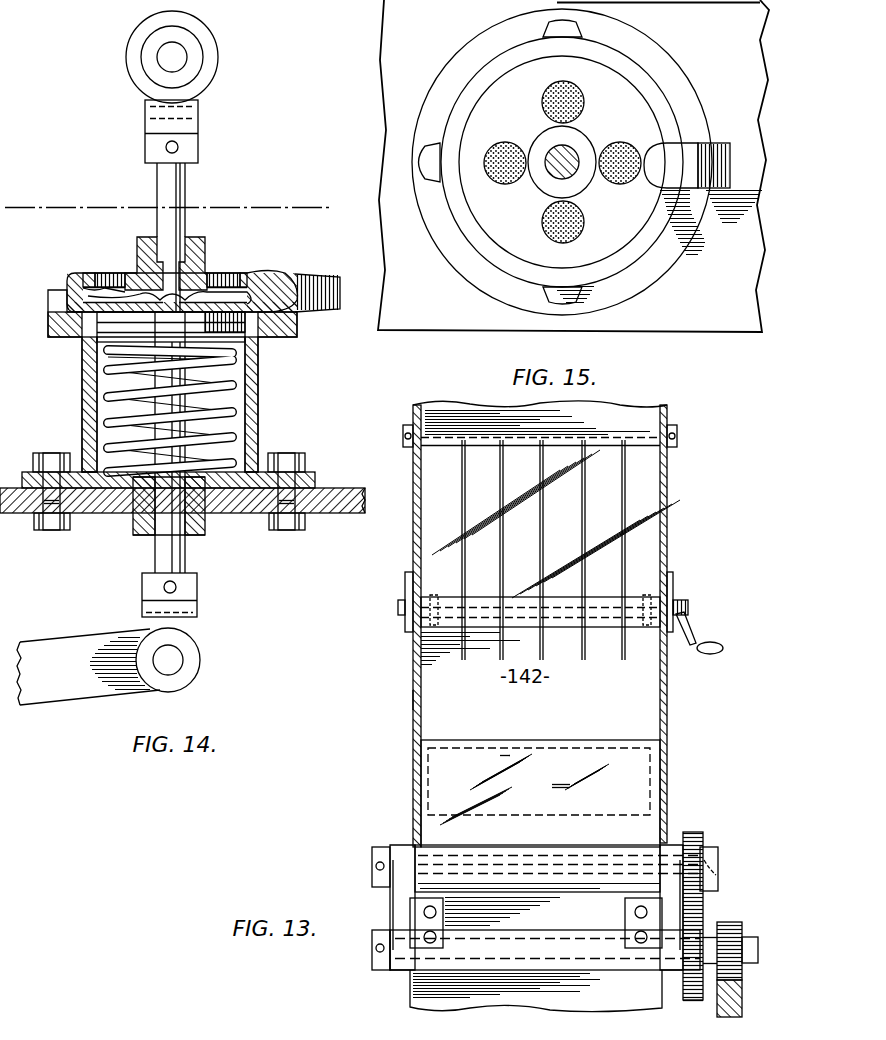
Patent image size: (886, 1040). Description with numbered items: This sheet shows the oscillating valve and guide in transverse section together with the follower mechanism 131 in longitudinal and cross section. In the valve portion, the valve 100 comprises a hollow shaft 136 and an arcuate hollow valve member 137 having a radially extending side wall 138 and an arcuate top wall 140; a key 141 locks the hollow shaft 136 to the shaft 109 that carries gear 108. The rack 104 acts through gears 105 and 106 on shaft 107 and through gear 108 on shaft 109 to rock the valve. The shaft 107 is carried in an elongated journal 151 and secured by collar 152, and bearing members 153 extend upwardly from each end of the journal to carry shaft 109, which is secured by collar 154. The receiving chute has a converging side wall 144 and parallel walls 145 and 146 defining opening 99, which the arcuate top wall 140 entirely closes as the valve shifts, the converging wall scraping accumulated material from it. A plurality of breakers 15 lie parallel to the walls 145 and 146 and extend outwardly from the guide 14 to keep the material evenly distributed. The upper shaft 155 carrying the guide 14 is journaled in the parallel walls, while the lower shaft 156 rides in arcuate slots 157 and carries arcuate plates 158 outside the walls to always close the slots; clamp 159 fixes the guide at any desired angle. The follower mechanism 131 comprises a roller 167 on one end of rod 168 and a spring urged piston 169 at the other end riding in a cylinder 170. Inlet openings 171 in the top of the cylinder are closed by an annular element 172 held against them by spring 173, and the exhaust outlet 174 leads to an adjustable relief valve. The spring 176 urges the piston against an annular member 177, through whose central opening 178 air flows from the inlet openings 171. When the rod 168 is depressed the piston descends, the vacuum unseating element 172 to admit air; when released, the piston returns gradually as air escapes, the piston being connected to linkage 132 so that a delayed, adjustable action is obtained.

In FIG. 13, the guide 14 is at (650, 481).
In FIG. 14, the breakers 15 is at (42, 200).
In FIG. 13, the breakers 15 is at (528, 472).
In FIG. 13, the opening 99 is at (455, 752).
In FIG. 13, the valve 100 is at (555, 740).
In FIG. 13, the rack 104 is at (745, 1012).
In FIG. 13, the gear 105 is at (730, 925).
In FIG. 13, the gear 106 is at (694, 1001).
In FIG. 13, the shaft 107 is at (758, 948).
In FIG. 13, the gear 108 is at (705, 833).
In FIG. 13, the shaft 109 is at (708, 877).
In FIG. 14, the follower mechanism 131 is at (260, 368).
In FIG. 15, the follower mechanism 131 is at (672, 100).
In FIG. 14, the linkage 132 is at (203, 672).
In FIG. 13, the hollow shaft 136 is at (505, 855).
In FIG. 13, the arcuate hollow valve member 137 is at (505, 750).
In FIG. 13, the side wall 138 is at (560, 774).
In FIG. 13, the arcuate top wall 140 is at (660, 735).
In FIG. 13, the key 141 is at (585, 858).
In FIG. 13, the converging side wall 144 is at (420, 718).
In FIG. 13, the parallel wall 145 is at (665, 690).
In FIG. 13, the parallel wall 146 is at (418, 700).
In FIG. 13, the elongated journal 151 is at (395, 970).
In FIG. 13, the collar 152 is at (372, 960).
In FIG. 13, the bearing member 153 is at (400, 845).
In FIG. 13, the collar 154 is at (372, 848).
In FIG. 13, the upper shaft 155 is at (640, 440).
In FIG. 13, the lower shaft 156 is at (690, 606).
In FIG. 13, the arcuate slots 157 is at (410, 600).
In FIG. 13, the arcuate plates 158 is at (410, 578).
In FIG. 13, the clamp 159 is at (405, 593).
In FIG. 14, the roller 167 is at (220, 48).
In FIG. 14, the rod 168 is at (187, 182).
In FIG. 15, the rod 168 is at (574, 148).
In FIG. 14, the piston 169 is at (100, 336).
In FIG. 14, the cylinder 170 is at (240, 400).
In FIG. 14, the inlet openings 171 is at (240, 290).
In FIG. 15, the inlet openings 171 is at (580, 214).
In FIG. 14, the annular element 172 is at (118, 275).
In FIG. 15, the annular element 172 is at (553, 214).
In FIG. 14, the spring 173 is at (200, 306).
In FIG. 14, the exhaust outlet 174 is at (338, 285).
In FIG. 15, the exhaust outlet 174 is at (714, 143).
In FIG. 14, the spring 176 is at (108, 420).
In FIG. 14, the annular member 177 is at (85, 300).
In FIG. 14, the central opening 178 is at (205, 262).